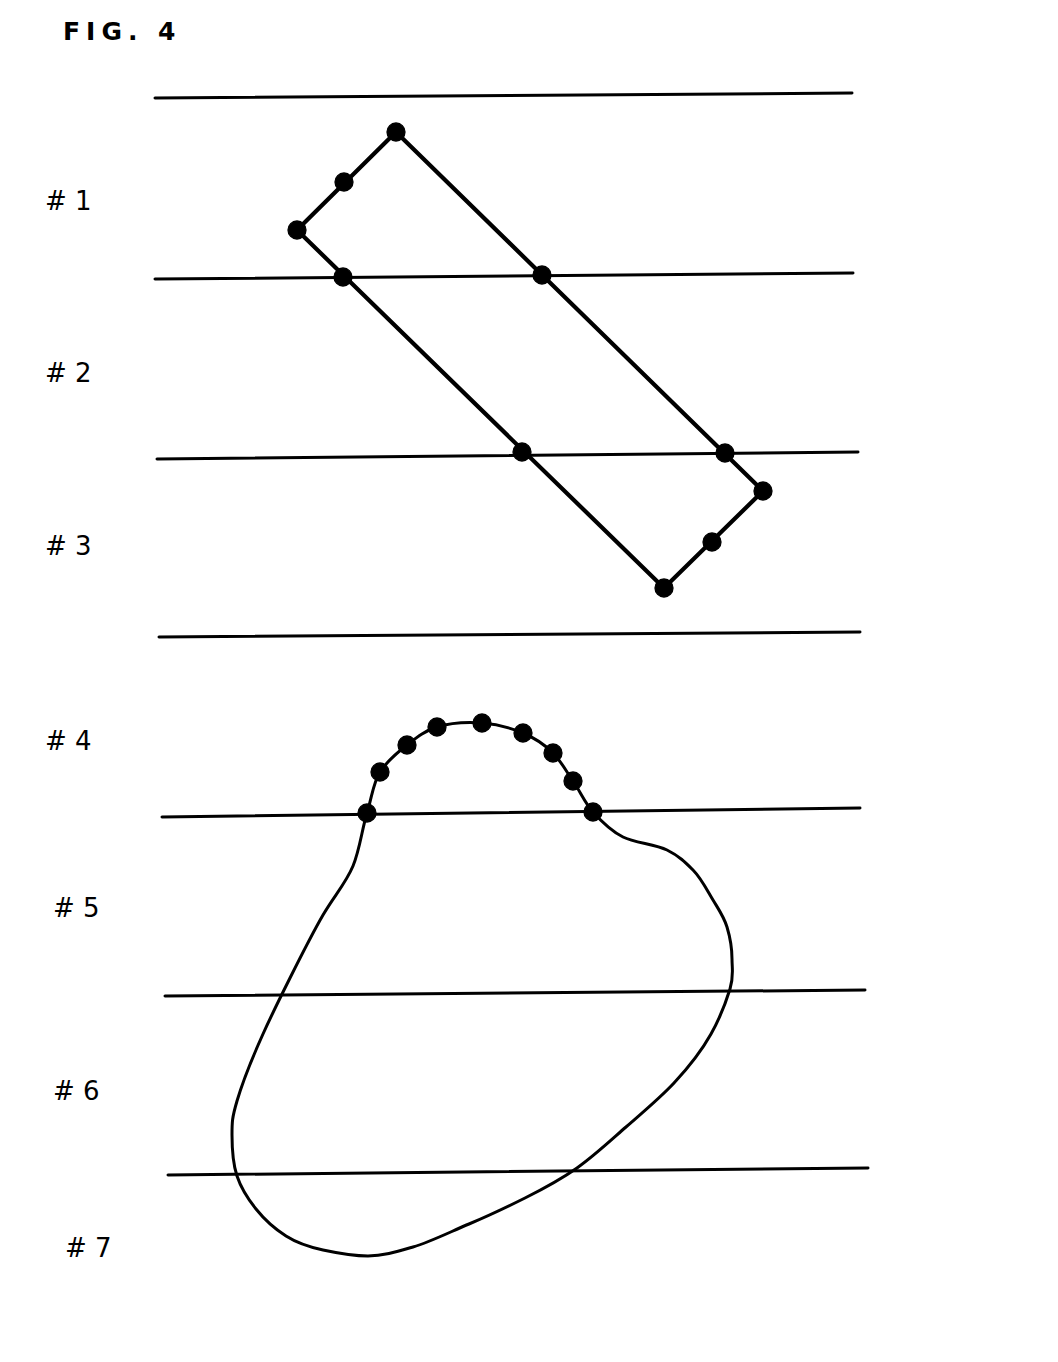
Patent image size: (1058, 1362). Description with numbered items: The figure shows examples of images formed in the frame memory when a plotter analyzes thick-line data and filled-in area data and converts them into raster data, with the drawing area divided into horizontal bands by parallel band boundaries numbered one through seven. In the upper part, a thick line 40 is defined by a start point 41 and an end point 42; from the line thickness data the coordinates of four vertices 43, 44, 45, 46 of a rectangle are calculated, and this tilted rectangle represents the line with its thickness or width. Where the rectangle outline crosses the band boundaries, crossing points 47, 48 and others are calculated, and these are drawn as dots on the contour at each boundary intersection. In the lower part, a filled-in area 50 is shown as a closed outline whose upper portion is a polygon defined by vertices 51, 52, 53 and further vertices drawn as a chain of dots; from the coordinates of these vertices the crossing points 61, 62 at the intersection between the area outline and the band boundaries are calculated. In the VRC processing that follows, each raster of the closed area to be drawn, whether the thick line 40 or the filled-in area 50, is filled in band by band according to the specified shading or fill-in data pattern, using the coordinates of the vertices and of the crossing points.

The thick line 40 is at (652, 375).
The start point 41 is at (342, 180).
The end point 42 is at (718, 546).
The vertex of the rectangle 43 is at (400, 126).
The vertex of the rectangle 44 is at (296, 229).
The vertex of the rectangle 45 is at (658, 586).
The vertex of the rectangle 46 is at (768, 488).
The crossing point 47 is at (341, 282).
The crossing point 48 is at (545, 270).
The filled-in area 50 is at (732, 915).
The vertex of the polygon 51 is at (378, 772).
The vertex of the polygon 52 is at (405, 745).
The vertex of the polygon 53 is at (437, 726).
The crossing point 61 is at (365, 815).
The crossing point 62 is at (597, 808).